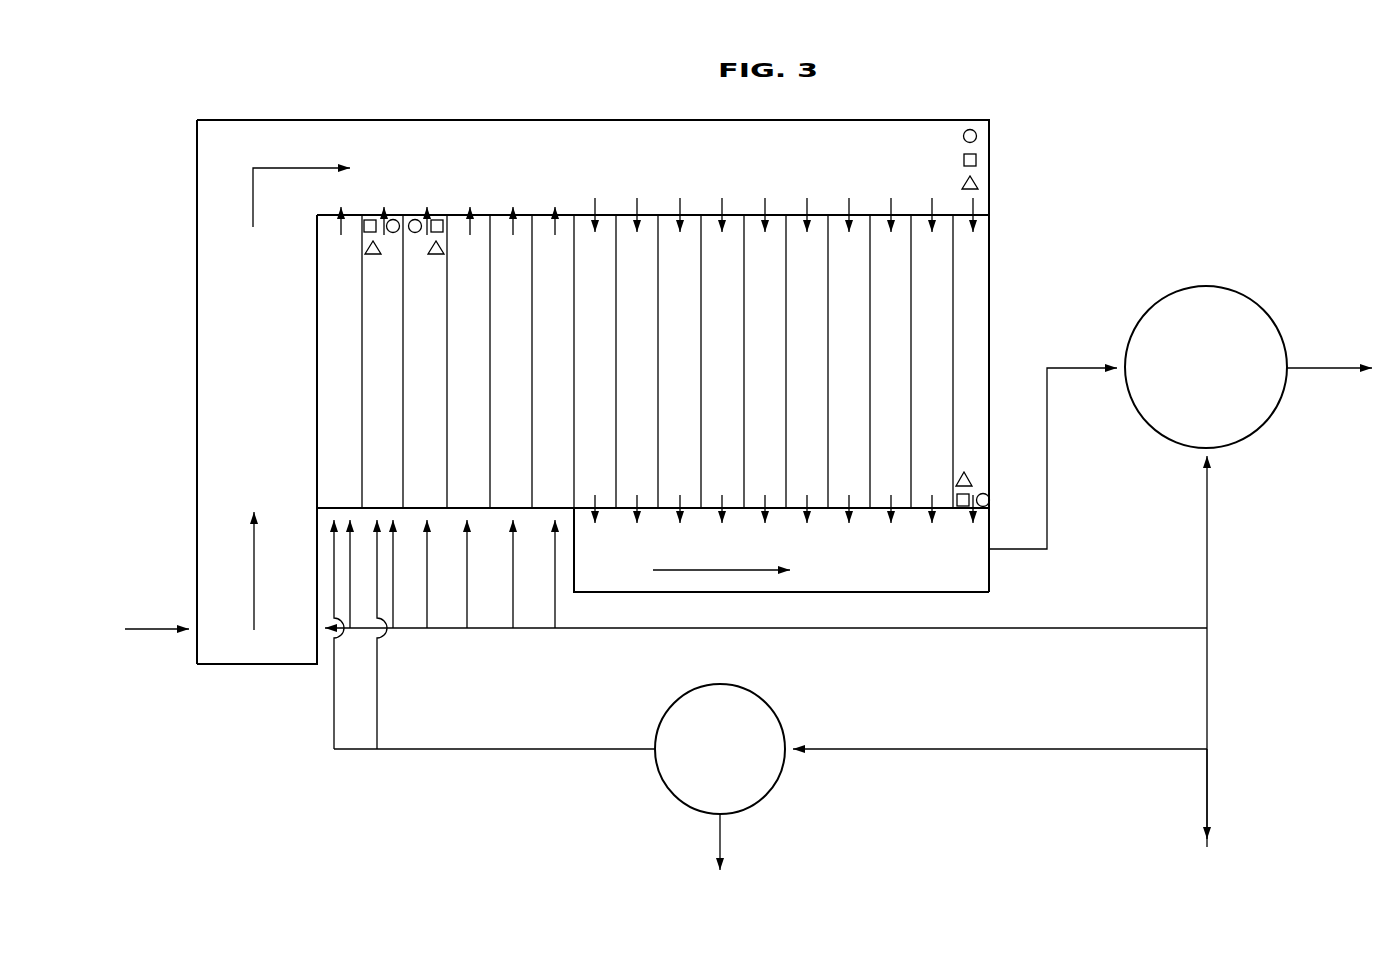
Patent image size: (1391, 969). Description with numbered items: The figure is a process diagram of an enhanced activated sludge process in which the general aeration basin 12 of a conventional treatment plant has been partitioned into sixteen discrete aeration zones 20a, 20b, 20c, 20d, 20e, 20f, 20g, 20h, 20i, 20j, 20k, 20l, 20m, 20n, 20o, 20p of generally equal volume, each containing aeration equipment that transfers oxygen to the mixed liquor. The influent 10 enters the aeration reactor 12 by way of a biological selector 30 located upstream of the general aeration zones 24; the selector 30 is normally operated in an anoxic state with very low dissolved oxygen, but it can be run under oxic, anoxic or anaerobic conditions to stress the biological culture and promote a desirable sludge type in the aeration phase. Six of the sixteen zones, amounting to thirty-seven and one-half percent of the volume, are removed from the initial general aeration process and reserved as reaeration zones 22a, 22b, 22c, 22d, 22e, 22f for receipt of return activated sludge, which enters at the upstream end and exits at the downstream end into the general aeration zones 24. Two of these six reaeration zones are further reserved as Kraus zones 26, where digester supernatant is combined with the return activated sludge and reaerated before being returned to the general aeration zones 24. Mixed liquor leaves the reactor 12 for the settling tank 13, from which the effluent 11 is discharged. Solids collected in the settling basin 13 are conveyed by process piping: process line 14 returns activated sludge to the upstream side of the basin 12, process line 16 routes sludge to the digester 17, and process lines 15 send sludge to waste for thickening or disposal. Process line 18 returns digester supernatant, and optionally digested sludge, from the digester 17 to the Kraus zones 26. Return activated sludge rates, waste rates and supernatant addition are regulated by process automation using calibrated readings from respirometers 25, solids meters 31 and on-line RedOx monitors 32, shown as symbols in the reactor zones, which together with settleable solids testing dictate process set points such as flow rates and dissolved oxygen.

The influent 10 is at (175, 628).
The effluent 11 is at (1300, 368).
The aeration reactor 12 is at (989, 258).
The settling tank 13 is at (1255, 300).
The process line 14 is at (732, 632).
The process line 15 is at (724, 845).
The process line 16 is at (960, 749).
The digester 17 is at (762, 696).
The process line 18 is at (535, 749).
The aeration zone 20a is at (339, 247).
The aeration zone 20b is at (379, 357).
The aeration zone 20c is at (421, 357).
The aeration zone 20d is at (464, 357).
The aeration zone 20e is at (507, 357).
The aeration zone 20f is at (549, 357).
The aeration zone 20g is at (591, 353).
The aeration zone 20h is at (633, 353).
The aeration zone 20i is at (675, 353).
The aeration zone 20j is at (717, 353).
The aeration zone 20k is at (761, 353).
The aeration zone 20l is at (802, 353).
The aeration zone 20m is at (847, 353).
The aeration zone 20n is at (887, 353).
The aeration zone 20o is at (928, 353).
The aeration zone 20p is at (969, 353).
The reaeration zone 22a is at (338, 494).
The reaeration zone 22b is at (383, 494).
The reaeration zone 22c is at (426, 504).
The reaeration zone 22d is at (468, 504).
The reaeration zone 22e is at (511, 504).
The reaeration zone 22f is at (553, 504).
The general aeration zone 24 is at (785, 466).
The respirometer 25 is at (416, 219).
The Kraus zone 26 is at (360, 602).
The biological selector 30 is at (273, 416).
The solids meter 31 is at (367, 219).
The on-line RedOx monitor 32 is at (364, 248).